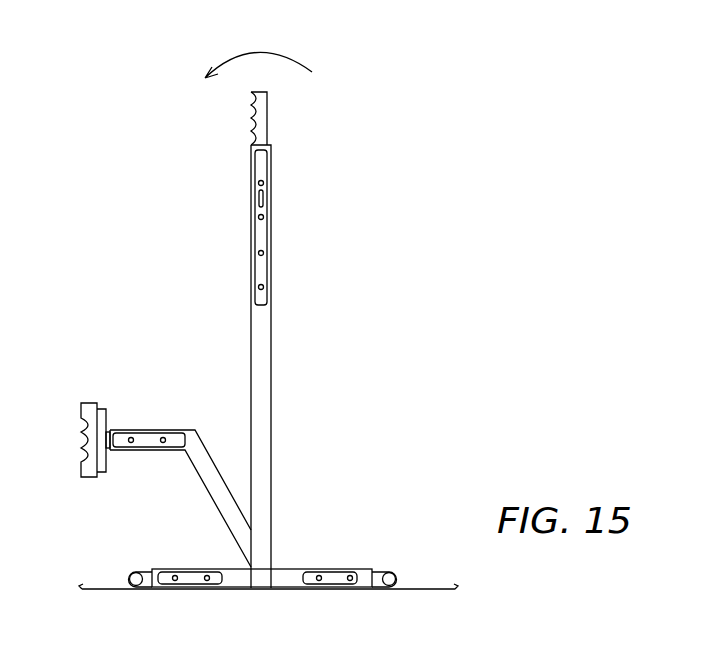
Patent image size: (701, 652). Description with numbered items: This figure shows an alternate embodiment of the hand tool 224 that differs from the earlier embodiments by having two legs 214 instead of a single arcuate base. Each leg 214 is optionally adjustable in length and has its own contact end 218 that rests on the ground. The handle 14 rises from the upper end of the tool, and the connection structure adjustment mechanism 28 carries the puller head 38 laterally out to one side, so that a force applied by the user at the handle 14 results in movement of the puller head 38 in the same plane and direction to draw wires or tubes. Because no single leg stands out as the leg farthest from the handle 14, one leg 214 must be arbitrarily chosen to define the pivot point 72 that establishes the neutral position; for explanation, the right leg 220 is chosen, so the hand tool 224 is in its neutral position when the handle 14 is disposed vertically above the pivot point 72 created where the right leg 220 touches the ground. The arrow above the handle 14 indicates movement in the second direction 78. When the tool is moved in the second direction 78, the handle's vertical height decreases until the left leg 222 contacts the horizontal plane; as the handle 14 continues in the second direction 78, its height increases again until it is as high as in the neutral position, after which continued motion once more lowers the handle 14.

The handle 14 is at (255, 116).
The second direction 78 is at (255, 53).
The hand tool 224 is at (331, 114).
The connection structure adjustment mechanism 28 is at (140, 410).
The puller head 38 is at (85, 410).
The pivot point 72 is at (368, 588).
The leg 214 is at (263, 555).
The left leg 222 is at (205, 568).
The right leg 220 is at (320, 568).
The contact end 218 is at (127, 583).